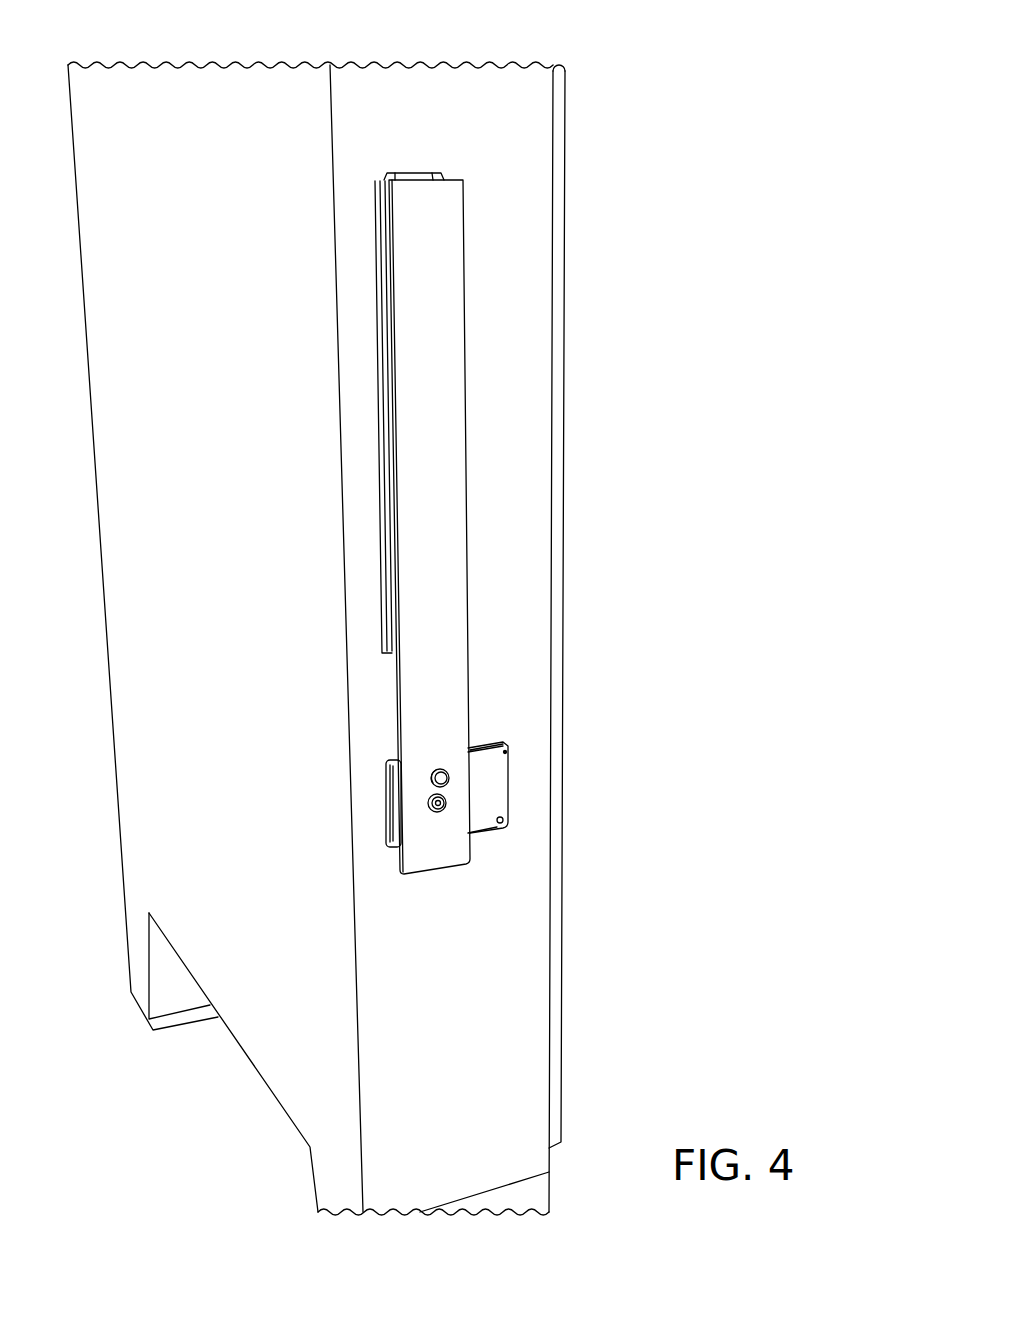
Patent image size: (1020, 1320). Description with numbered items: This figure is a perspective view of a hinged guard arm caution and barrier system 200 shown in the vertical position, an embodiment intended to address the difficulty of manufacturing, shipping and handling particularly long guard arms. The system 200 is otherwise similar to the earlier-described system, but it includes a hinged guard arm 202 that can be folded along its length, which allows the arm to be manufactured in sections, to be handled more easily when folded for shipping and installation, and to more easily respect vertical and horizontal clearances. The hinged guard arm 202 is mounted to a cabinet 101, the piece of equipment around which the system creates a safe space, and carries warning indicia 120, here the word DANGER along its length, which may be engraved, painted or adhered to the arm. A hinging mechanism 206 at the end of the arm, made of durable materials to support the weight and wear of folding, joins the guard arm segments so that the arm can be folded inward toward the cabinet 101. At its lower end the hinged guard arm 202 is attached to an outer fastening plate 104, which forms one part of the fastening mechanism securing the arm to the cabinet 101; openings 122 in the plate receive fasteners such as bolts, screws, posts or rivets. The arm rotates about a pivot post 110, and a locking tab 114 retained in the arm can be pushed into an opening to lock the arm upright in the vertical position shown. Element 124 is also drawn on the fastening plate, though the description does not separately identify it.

The hinged guard arm caution and barrier system 200 is at (598, 41).
The cabinet 101 is at (557, 122).
The hinged guard arm 202 is at (470, 366).
The hinging mechanism 206 is at (408, 173).
The warning indicia 120 is at (454, 237).
The openings 122 is at (388, 770).
The outer fastening plate 104 is at (500, 780).
The hole 124 is at (503, 820).
The locking tab 114 is at (438, 770).
The pivot post 110 is at (434, 811).